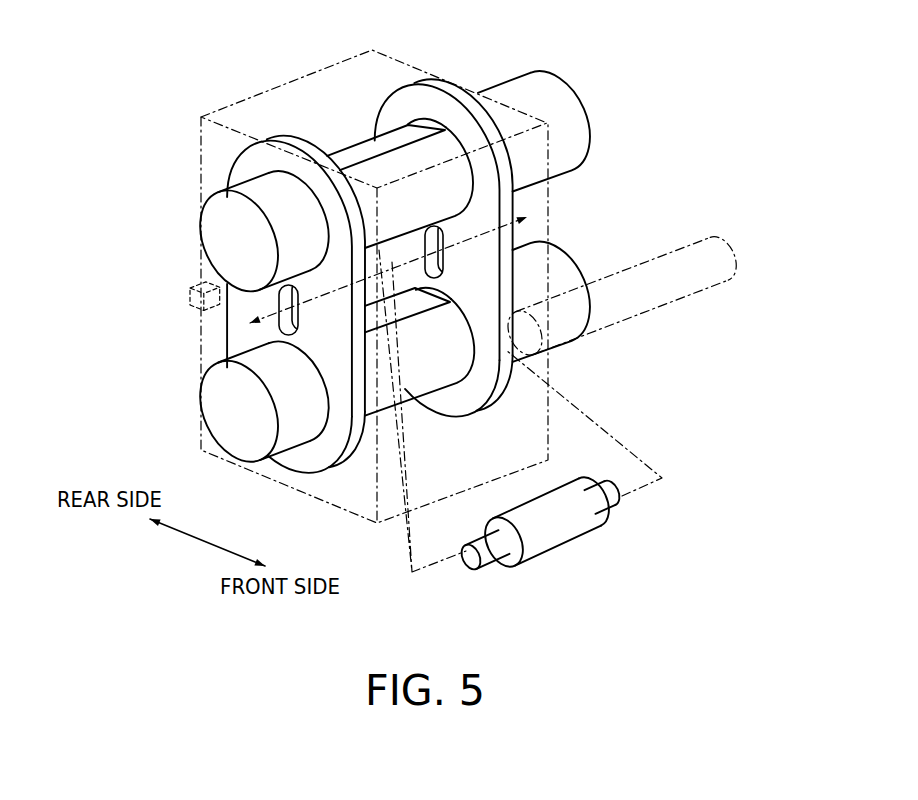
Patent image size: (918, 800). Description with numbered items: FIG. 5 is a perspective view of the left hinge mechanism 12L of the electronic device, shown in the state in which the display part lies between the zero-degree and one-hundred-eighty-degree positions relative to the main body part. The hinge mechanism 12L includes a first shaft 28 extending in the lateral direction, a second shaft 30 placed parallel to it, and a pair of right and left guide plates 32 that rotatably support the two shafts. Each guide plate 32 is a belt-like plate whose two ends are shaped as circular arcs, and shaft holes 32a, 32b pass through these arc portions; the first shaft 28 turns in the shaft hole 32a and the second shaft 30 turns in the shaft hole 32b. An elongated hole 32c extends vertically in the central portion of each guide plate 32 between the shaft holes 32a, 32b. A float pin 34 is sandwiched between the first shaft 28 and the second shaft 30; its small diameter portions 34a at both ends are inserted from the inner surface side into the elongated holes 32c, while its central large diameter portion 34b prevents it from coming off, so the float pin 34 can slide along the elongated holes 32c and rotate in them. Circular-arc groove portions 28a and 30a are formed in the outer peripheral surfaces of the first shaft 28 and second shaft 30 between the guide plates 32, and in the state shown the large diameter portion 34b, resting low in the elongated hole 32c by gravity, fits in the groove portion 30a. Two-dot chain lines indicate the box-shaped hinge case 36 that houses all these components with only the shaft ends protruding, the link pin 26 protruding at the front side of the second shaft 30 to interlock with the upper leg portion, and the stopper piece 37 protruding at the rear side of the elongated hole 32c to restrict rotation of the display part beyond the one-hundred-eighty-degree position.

The left hinge mechanism 12L is at (121, 28).
The link pin 26 is at (648, 310).
The first shaft 28 is at (565, 102).
The groove portion 28a is at (357, 155).
The second shaft 30 is at (220, 418).
The groove portion 30a is at (421, 313).
The guide plate 32 is at (245, 176).
The shaft hole 32a is at (305, 206).
The shaft hole 32b is at (307, 403).
The elongated hole 32c is at (440, 232).
The float pin 34 is at (582, 553).
The small diameter portion 34a is at (490, 557).
The large diameter portion 34b is at (572, 535).
The hinge case 36 is at (327, 63).
The stopper piece 37 is at (188, 293).